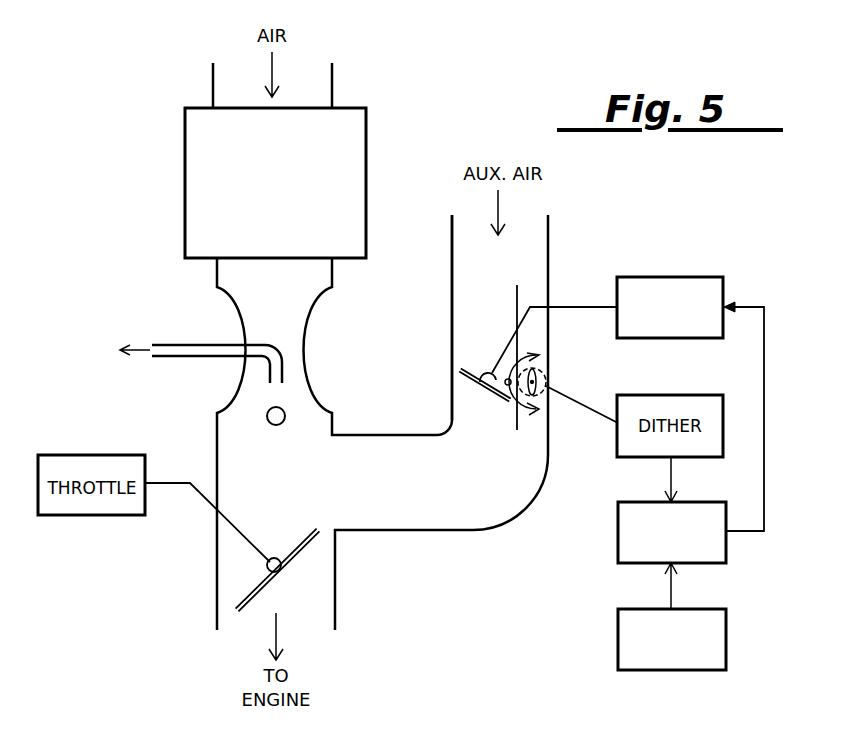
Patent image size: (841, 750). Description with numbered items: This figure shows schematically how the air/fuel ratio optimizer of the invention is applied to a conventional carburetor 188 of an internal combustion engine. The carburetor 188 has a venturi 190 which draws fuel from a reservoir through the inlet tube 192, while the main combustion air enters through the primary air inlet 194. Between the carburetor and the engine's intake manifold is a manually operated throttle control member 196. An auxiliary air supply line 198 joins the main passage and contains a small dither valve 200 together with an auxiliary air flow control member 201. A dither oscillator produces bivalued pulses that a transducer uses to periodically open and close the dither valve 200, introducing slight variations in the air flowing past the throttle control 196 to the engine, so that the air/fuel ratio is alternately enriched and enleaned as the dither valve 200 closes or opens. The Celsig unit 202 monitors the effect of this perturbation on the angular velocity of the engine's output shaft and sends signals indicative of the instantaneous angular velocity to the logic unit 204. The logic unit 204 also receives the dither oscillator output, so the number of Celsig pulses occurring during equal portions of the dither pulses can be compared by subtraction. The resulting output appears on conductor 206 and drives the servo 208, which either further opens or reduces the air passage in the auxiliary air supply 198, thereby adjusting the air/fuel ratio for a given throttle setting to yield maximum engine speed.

The carburetor 188 is at (366, 134).
The venturi 190 is at (308, 331).
The inlet tube 192 is at (196, 343).
The primary air inlet 194 is at (333, 83).
The throttle control member 196 is at (248, 596).
The auxiliary air supply line 198 is at (549, 232).
The dither valve 200 is at (548, 376).
The auxiliary air flow control member 201 is at (470, 378).
The Celsig unit 202 is at (692, 607).
The logic unit 204 is at (692, 500).
The conductor 206 is at (765, 410).
The servo 208 is at (670, 276).